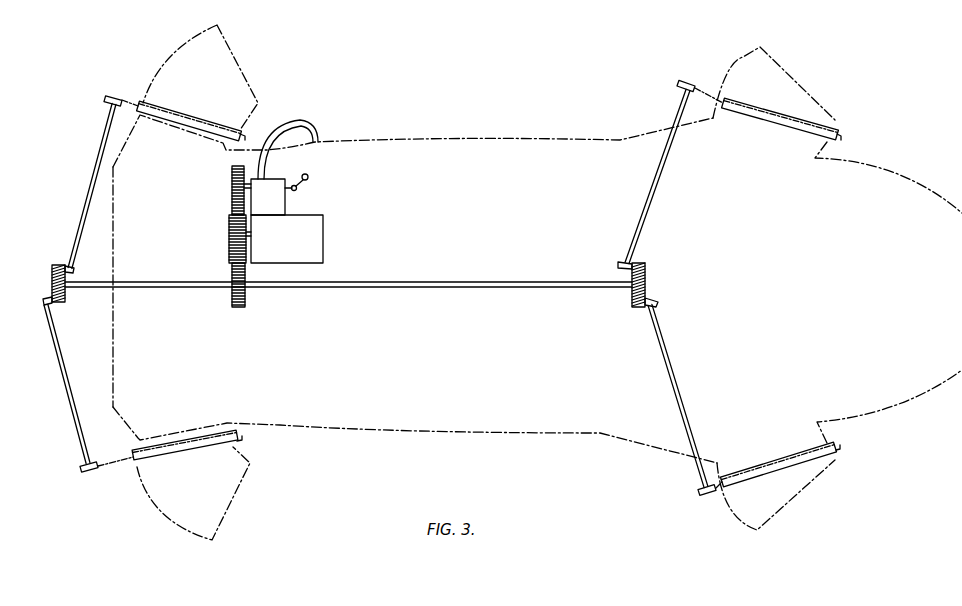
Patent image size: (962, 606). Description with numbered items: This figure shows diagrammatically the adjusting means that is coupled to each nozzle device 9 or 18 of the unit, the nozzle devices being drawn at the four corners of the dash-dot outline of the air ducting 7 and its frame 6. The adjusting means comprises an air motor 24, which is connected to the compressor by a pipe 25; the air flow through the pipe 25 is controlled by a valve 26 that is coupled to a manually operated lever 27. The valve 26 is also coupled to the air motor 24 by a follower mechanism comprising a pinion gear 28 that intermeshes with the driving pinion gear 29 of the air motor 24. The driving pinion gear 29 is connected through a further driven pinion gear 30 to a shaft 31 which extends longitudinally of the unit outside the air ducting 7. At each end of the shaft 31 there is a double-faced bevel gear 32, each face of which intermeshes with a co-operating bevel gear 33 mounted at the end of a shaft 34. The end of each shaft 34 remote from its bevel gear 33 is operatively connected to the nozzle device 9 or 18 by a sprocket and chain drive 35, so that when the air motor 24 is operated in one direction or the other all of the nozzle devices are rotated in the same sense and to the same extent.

The vertical body outline / frame 6 is at (113, 372).
The air ducting 7 is at (400, 420).
The nozzle device 9 is at (797, 98).
The nozzle device 18 is at (232, 78).
The air motor 24 is at (315, 228).
The pipe 25 is at (303, 125).
The valve 26 is at (272, 205).
The manually operated lever 27 is at (308, 183).
The pinion gear 28 is at (232, 186).
The driving pinion gear 29 is at (229, 237).
The driven pinion gear 30 is at (232, 300).
The shaft 31 is at (395, 283).
The double-faced bevel gear 32 is at (63, 295).
The bevel gear 33 is at (78, 272).
The shaft 34 is at (92, 210).
The sprocket and chain drive 35 is at (128, 97).